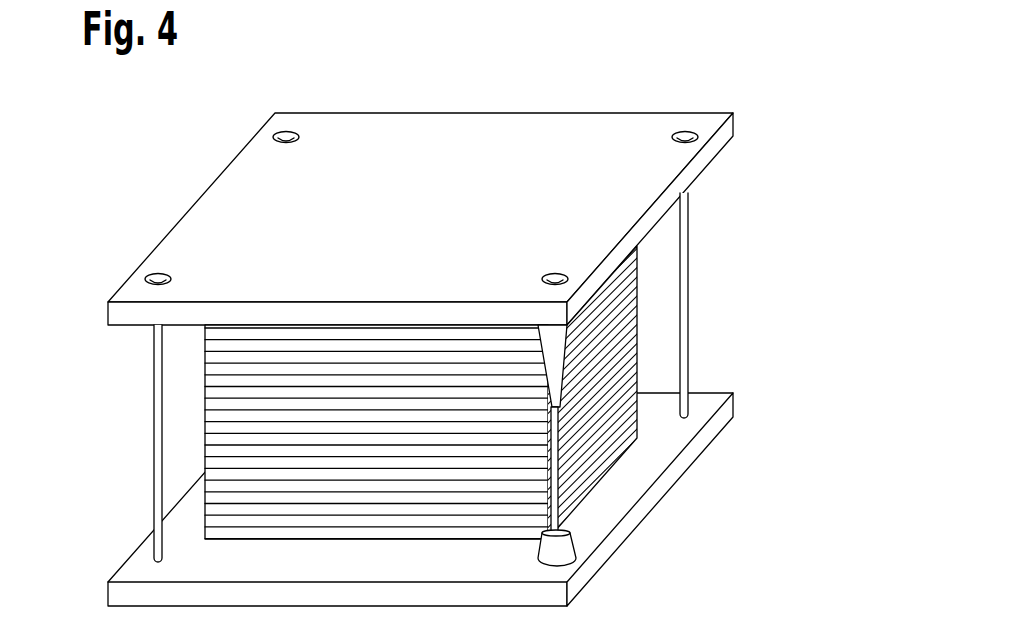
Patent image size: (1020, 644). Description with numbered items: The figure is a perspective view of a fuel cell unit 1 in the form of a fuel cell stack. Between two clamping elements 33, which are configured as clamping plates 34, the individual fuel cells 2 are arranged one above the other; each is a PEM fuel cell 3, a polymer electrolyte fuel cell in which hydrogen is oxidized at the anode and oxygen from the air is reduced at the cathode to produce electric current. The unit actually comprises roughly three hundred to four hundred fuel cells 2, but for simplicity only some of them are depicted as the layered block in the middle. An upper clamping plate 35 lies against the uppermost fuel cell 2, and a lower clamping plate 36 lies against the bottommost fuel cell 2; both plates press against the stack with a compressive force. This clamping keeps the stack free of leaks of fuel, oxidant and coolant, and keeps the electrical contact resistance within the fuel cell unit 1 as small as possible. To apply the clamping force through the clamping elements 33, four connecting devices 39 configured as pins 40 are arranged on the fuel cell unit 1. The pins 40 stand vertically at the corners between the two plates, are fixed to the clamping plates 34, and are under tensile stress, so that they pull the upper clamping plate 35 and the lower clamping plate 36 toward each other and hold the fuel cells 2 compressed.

The fuel cell unit 1 is at (773, 113).
The fuel cell 2 is at (492, 400).
The PEM fuel cell 3 is at (220, 382).
The clamping element 33 is at (460, 322).
The clamping plate 34 is at (460, 322).
The upper clamping plate 35 is at (460, 135).
The lower clamping plate 36 is at (650, 498).
The connecting device 39 is at (416, 384).
The pin 40 is at (553, 355).